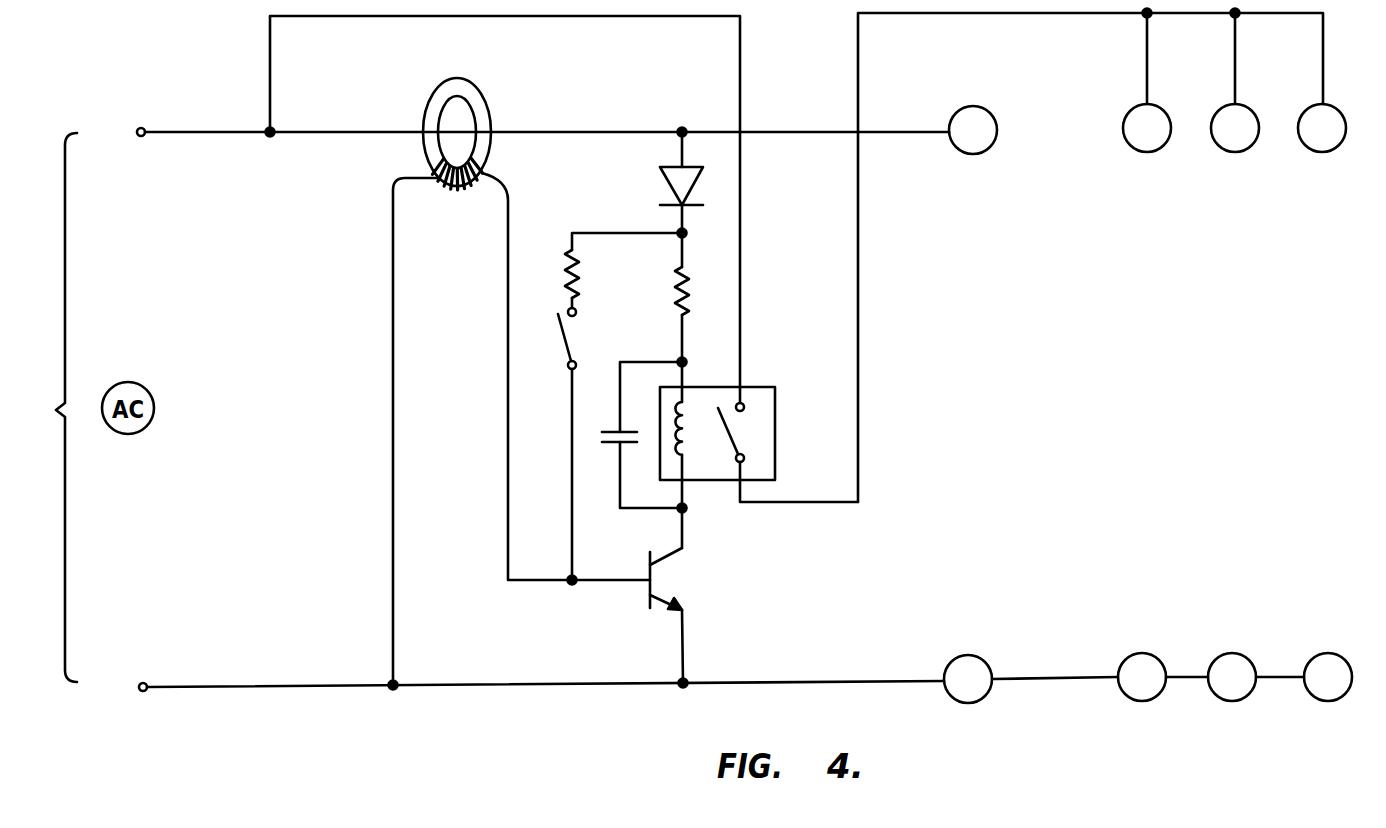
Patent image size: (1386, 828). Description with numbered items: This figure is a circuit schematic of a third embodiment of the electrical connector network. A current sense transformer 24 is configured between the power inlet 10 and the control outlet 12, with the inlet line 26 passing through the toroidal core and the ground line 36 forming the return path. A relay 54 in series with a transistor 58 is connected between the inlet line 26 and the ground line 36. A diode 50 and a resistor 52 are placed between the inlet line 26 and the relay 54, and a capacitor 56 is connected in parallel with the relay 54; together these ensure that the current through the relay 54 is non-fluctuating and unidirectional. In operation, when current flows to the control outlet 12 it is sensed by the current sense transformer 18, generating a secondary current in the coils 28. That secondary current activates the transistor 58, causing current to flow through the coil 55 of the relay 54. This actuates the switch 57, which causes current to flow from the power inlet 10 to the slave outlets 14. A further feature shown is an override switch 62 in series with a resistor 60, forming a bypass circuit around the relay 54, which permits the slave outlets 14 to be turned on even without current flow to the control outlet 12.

The power inlet 10 is at (53, 407).
The control outlet 12 is at (986, 109).
The slave outlets 14 is at (1162, 108).
The current sense transformer 18 is at (477, 158).
The current sense transformer 24 is at (483, 103).
The inlet line 26 is at (316, 134).
The coils 28 is at (452, 188).
The ground line 36 is at (322, 688).
The diode 50 is at (665, 184).
The resistor 52 is at (672, 296).
The relay 54 is at (759, 430).
The coil 55 is at (690, 404).
The capacitor 56 is at (612, 428).
The switch 57 is at (732, 434).
The transistor 58 is at (664, 590).
The resistor 60 is at (565, 268).
The override switch 62 is at (566, 346).